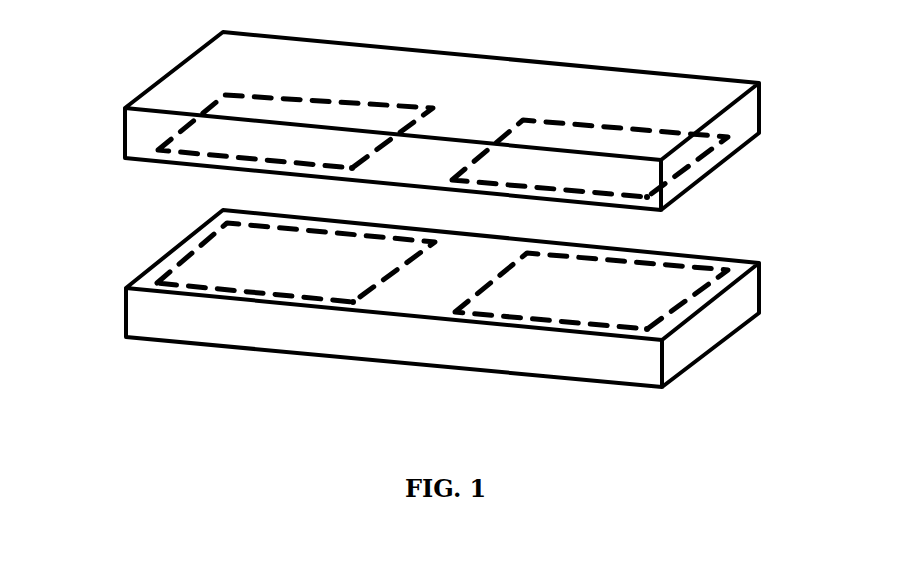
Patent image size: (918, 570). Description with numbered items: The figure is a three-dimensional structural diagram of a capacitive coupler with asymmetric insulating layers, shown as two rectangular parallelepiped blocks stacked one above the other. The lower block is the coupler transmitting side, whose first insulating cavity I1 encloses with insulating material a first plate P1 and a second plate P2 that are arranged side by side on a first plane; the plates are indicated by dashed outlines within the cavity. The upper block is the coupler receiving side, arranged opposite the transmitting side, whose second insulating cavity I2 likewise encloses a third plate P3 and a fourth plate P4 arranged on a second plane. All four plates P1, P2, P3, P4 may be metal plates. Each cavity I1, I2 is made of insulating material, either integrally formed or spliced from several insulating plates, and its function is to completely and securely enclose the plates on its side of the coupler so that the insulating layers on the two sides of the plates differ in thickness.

The first insulating cavity I1 is at (318, 335).
The second insulating cavity I2 is at (263, 68).
The first plate P1 is at (253, 270).
The second plate P2 is at (633, 292).
The third plate P3 is at (243, 137).
The fourth plate P4 is at (632, 177).